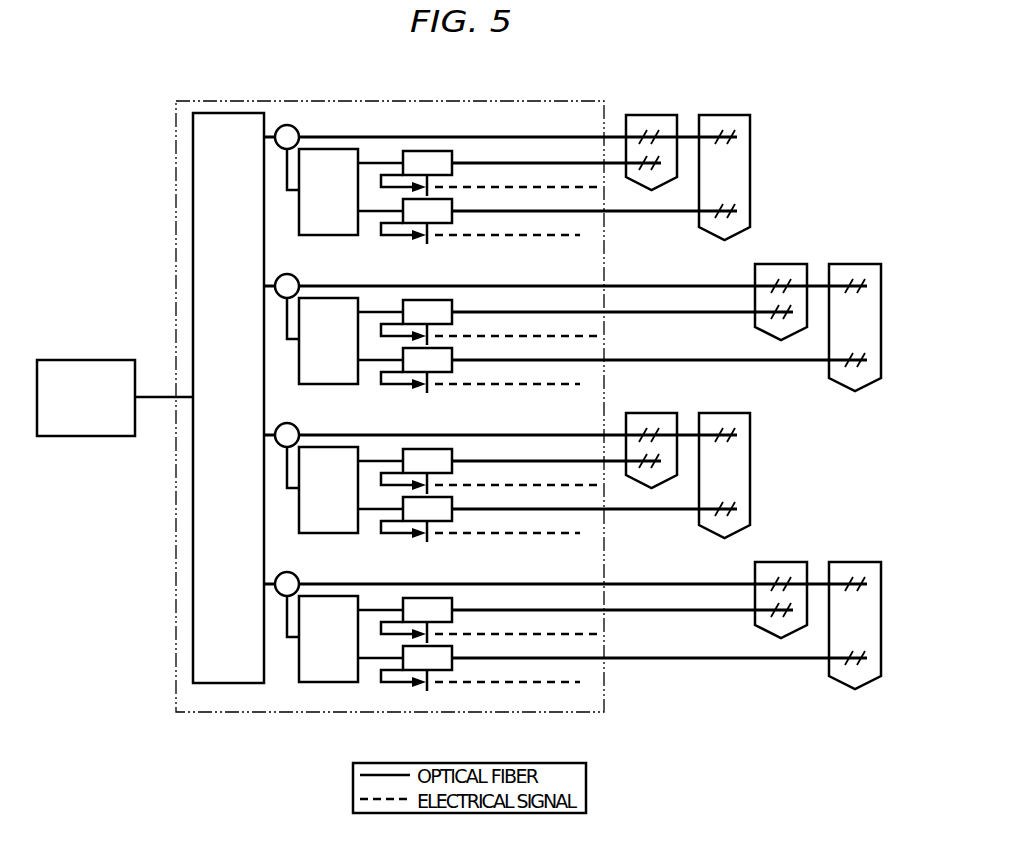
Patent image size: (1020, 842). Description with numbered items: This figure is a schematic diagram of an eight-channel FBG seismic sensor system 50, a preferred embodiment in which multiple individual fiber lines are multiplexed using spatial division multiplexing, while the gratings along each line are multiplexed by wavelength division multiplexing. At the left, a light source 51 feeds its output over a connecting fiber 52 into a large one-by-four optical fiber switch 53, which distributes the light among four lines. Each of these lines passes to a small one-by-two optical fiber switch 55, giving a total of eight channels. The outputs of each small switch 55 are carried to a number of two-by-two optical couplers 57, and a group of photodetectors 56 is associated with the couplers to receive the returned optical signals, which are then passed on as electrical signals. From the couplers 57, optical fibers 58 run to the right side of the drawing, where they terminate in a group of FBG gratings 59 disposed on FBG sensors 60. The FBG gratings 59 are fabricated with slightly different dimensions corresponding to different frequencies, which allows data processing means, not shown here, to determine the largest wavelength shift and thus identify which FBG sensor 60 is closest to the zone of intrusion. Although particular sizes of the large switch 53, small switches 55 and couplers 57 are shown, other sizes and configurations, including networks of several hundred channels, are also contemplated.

The eight-channel FBG seismic sensor system 50 is at (99, 203).
The light source 51 is at (78, 360).
The optical fiber 52 is at (153, 400).
The large 1×4 optical fiber switch 53 is at (224, 113).
The small 1×2 optical fiber switch 55 is at (324, 149).
The photodetector 56 is at (414, 240).
The 2×2 optical coupler 57 is at (426, 151).
The optical fiber 58 is at (518, 136).
The FBG grating 59 is at (661, 135).
The FBG sensor 60 is at (651, 113).